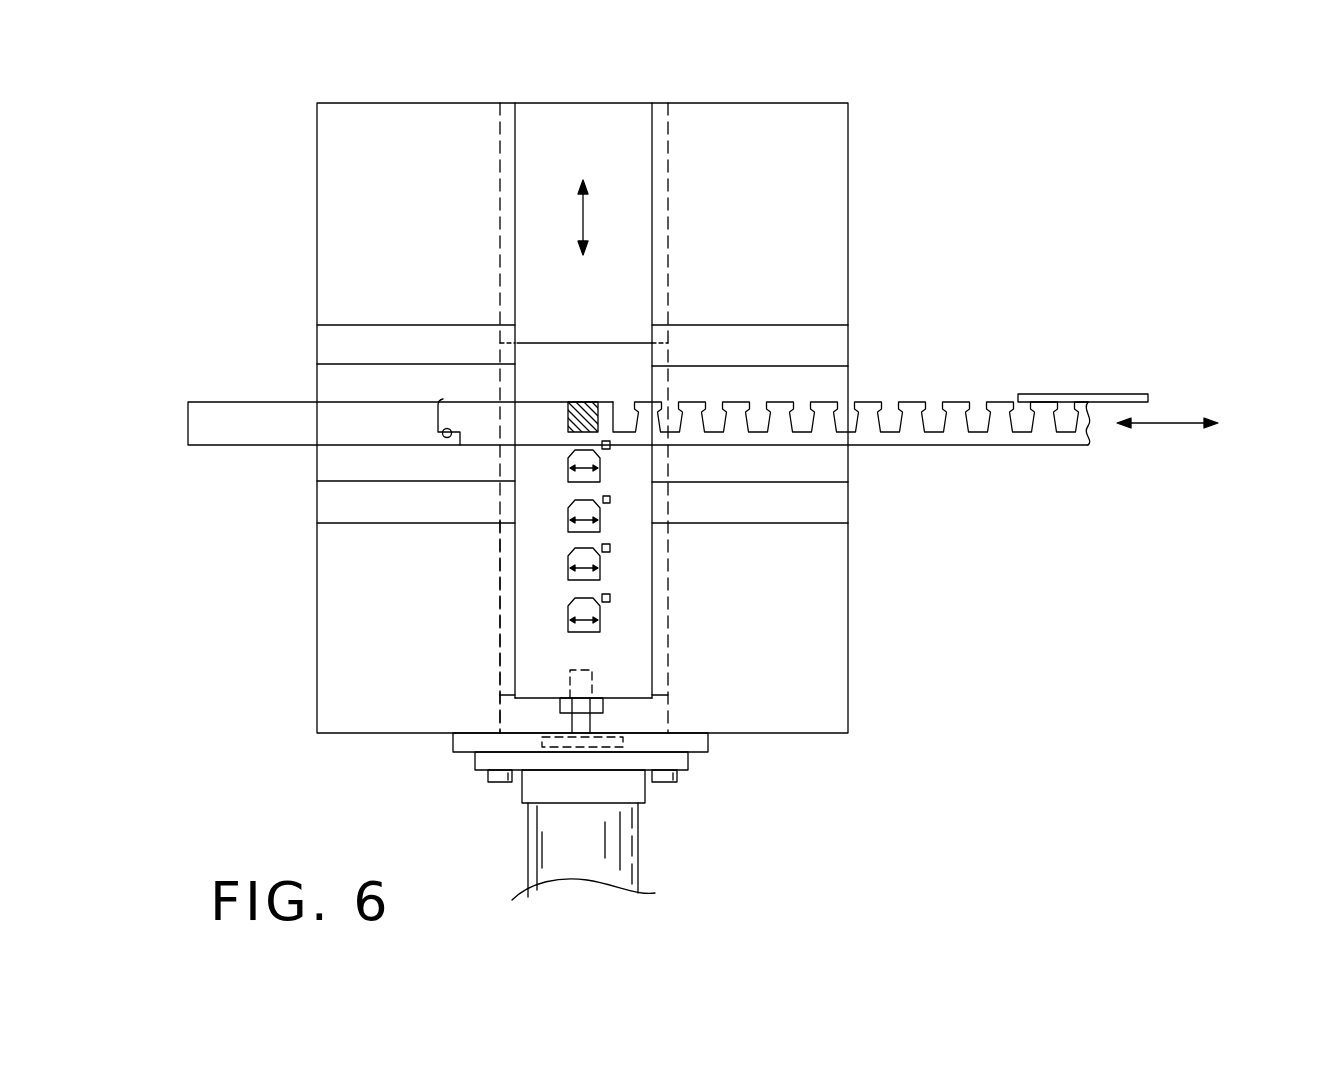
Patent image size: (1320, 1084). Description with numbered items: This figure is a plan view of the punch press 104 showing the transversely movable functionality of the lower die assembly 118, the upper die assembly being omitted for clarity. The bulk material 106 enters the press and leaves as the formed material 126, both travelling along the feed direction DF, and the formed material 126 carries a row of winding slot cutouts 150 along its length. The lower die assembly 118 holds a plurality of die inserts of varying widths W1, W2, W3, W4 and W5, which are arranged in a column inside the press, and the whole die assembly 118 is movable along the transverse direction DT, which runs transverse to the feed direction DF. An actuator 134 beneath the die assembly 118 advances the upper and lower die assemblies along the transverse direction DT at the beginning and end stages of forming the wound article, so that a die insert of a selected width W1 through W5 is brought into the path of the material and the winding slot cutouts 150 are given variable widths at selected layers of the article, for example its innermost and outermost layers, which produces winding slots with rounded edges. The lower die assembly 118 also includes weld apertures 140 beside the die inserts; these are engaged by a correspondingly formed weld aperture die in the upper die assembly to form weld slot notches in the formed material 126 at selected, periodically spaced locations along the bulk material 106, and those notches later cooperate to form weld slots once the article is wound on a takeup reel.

The punch press 104 is at (636, 98).
The bulk material 106 is at (228, 430).
The lower die assembly 118 is at (485, 623).
The formed material 126 is at (975, 446).
The actuator 134 is at (578, 727).
The weld apertures 140 is at (610, 446).
The winding slot cutouts 150 is at (976, 400).
The width of die insert W1 is at (585, 400).
The width of die insert W2 is at (585, 470).
The width of die insert W3 is at (580, 525).
The width of die insert W4 is at (580, 574).
The width of die insert W5 is at (585, 622).
The transverse direction DT is at (583, 215).
The feed direction DF is at (1163, 424).